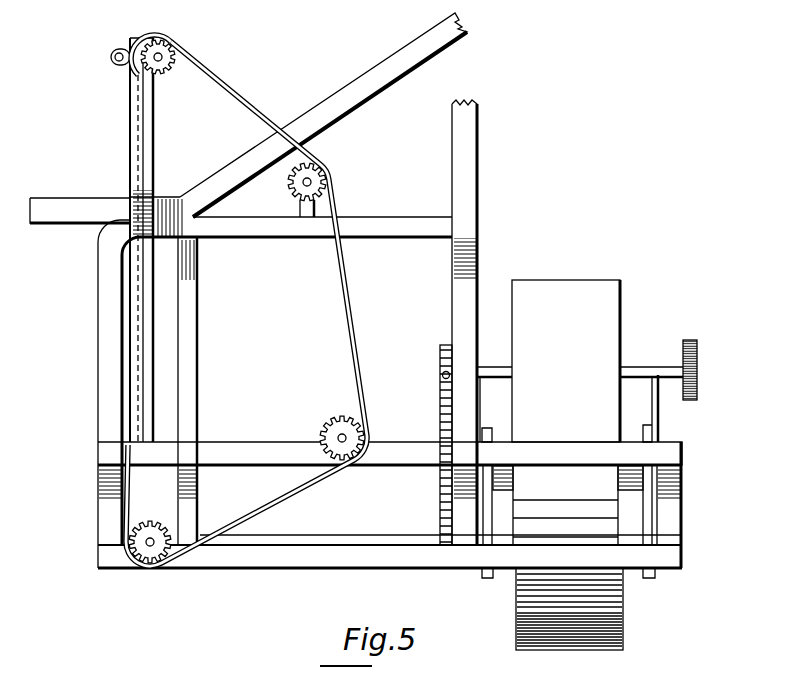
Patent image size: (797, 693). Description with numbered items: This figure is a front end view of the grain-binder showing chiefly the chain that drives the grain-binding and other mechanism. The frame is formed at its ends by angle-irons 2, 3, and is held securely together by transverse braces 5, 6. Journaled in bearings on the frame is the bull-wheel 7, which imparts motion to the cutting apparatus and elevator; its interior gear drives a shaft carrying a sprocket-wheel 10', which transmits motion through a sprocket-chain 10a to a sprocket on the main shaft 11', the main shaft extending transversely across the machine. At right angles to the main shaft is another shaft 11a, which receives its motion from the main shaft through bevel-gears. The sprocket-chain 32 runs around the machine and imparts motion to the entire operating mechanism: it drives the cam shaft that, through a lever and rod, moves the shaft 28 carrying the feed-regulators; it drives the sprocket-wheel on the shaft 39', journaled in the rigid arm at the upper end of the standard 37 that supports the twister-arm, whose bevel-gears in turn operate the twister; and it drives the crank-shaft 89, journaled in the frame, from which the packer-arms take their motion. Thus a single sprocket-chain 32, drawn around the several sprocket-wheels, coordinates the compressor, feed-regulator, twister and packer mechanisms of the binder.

The angle-iron 2 is at (98, 333).
The angle-iron 3 is at (477, 263).
The transverse brace 5 is at (268, 455).
The transverse brace 6 is at (305, 560).
The bull-wheel 7 is at (567, 465).
The sprocket-wheel 10' is at (427, 369).
The sprocket-chain 10a is at (442, 418).
The main shaft 11' is at (440, 529).
The shaft 11a is at (148, 548).
The shaft 28 is at (342, 438).
The sprocket-chain 32 is at (347, 268).
The standard 37 is at (156, 143).
The shaft 39' is at (181, 56).
The crank-shaft 89 is at (312, 182).